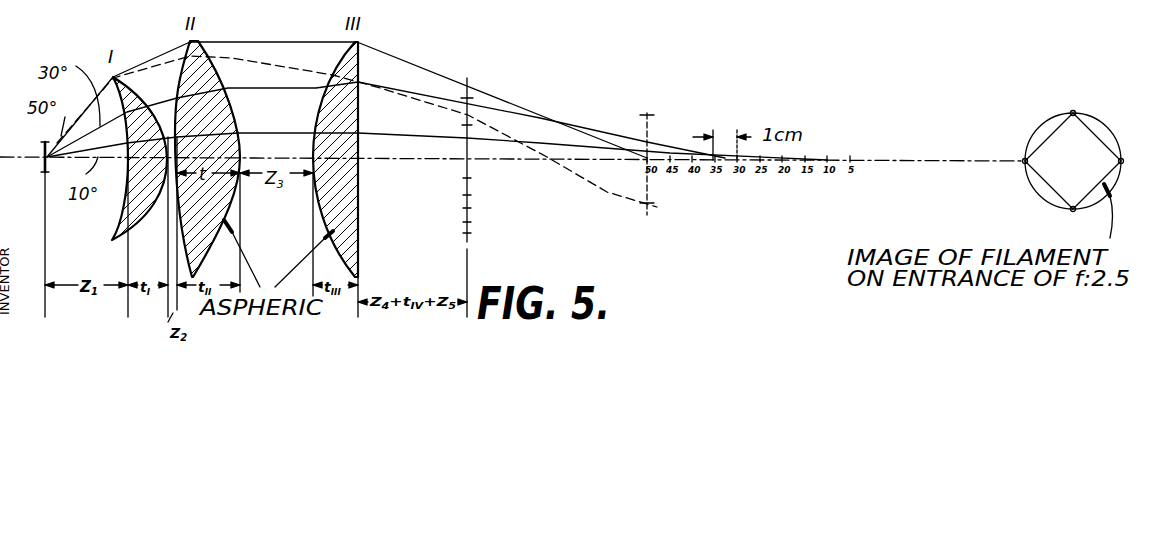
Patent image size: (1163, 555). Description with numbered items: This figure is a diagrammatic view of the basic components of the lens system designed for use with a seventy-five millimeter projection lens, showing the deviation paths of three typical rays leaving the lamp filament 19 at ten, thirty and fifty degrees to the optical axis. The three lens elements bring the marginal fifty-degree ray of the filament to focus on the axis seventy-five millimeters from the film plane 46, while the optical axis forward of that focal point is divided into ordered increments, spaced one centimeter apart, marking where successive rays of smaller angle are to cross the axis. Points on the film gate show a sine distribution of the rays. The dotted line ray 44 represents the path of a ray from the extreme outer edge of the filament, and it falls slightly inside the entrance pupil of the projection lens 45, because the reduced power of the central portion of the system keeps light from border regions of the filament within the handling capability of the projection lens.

The light source (filament) 19 is at (44, 156).
The dotted line ray 44 is at (272, 62).
The projection lens 45 is at (645, 159).
The film plane 46 is at (463, 168).